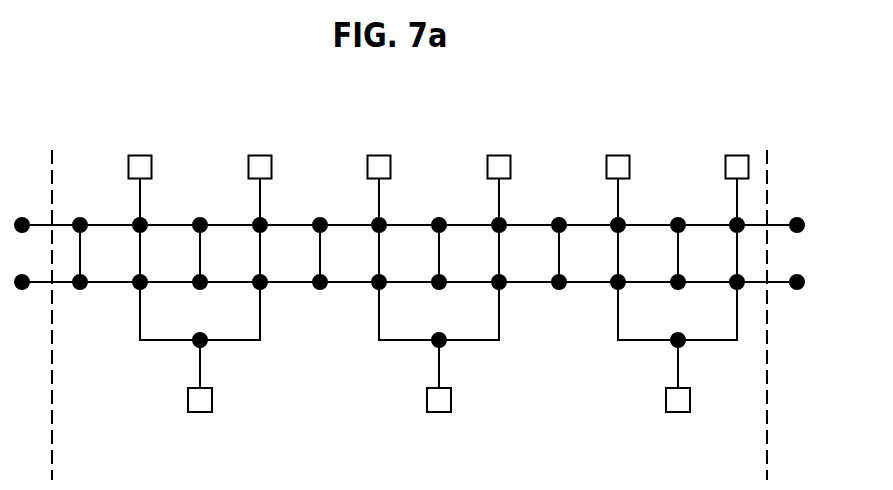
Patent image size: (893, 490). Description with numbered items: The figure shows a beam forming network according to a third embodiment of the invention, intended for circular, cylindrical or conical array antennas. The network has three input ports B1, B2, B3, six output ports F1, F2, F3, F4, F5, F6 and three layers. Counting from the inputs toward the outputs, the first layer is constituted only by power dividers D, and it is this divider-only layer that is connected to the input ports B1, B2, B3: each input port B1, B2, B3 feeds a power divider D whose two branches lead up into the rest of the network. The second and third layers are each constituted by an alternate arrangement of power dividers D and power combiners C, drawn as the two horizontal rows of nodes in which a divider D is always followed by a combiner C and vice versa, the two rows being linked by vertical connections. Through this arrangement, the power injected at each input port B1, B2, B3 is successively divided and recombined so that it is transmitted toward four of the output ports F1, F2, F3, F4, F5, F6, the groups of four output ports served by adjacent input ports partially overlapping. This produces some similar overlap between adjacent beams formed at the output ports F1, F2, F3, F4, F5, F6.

The output port F1 is at (140, 172).
The output port F2 is at (260, 172).
The output port F3 is at (379, 172).
The output port F4 is at (499, 172).
The output port F5 is at (618, 172).
The output port F6 is at (737, 172).
The input port B1 is at (200, 367).
The input port B2 is at (439, 367).
The input port B3 is at (677, 367).
The power combiner C is at (415, 240).
The power divider D is at (408, 282).